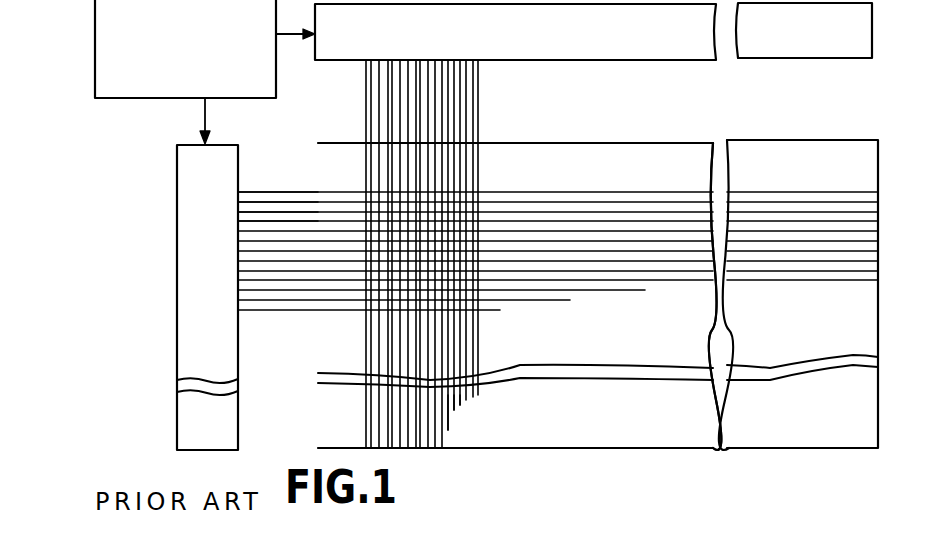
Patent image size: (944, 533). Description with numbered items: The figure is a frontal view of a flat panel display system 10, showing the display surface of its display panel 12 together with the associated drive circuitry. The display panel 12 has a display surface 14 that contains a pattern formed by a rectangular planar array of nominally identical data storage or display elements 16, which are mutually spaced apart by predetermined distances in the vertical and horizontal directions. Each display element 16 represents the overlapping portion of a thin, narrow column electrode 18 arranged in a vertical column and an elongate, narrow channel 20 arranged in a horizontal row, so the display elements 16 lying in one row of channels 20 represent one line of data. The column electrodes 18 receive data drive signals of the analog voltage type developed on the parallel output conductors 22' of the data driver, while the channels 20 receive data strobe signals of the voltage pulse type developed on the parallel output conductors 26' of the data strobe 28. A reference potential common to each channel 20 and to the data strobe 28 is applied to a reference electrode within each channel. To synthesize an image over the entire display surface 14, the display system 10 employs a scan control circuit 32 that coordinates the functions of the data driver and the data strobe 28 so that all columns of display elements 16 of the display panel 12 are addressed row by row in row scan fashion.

The flat panel display system 10 is at (501, 455).
The display panel 12 is at (698, 450).
The display surface 14 is at (592, 421).
The display elements 16 is at (398, 188).
The column electrodes 18 is at (460, 347).
The channels 20 is at (616, 218).
The output conductors 22' is at (587, 55).
The output conductors 26' is at (278, 176).
The data strobe 28 is at (177, 219).
The scan control circuit 32 is at (95, 31).